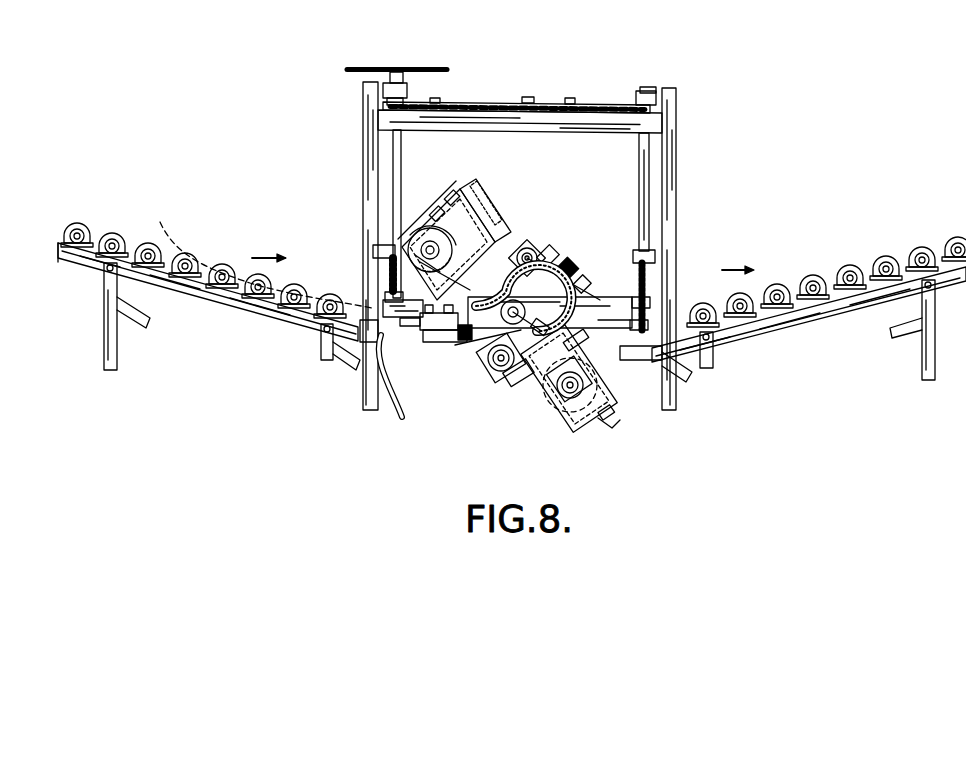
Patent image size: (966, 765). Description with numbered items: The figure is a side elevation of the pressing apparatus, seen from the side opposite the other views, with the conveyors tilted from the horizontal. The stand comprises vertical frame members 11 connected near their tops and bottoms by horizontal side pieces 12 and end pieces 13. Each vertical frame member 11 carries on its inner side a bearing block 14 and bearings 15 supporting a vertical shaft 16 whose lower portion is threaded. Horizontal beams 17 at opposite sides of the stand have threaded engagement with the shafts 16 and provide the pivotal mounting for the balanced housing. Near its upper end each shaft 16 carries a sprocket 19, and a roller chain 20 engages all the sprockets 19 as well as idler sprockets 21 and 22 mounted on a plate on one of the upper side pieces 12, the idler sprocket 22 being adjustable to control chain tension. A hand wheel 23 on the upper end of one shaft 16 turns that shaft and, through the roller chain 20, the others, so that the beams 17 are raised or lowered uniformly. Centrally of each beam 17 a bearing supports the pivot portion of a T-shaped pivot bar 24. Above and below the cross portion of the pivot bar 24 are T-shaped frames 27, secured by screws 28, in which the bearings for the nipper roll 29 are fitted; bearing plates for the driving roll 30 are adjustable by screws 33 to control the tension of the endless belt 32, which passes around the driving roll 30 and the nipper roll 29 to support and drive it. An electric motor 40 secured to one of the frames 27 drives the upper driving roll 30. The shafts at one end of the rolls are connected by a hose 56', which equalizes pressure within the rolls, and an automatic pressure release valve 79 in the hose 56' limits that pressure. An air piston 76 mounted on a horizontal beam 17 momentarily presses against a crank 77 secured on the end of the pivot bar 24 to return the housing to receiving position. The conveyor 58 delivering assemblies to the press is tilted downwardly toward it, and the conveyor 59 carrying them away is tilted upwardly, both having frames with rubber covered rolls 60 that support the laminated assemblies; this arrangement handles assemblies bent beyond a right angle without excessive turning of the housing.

The vertical frame member 11 is at (363, 192).
The horizontal side piece 12 is at (503, 133).
The end piece 13 is at (362, 112).
The bearing block 14 is at (412, 338).
The bearing 15 is at (404, 102).
The vertical shaft 16 is at (401, 147).
The horizontal beam 17 is at (582, 372).
The sprocket 19 is at (425, 103).
The roller chain 20 is at (600, 105).
The idler sprocket 21 is at (527, 98).
The idler sprocket 22 is at (572, 118).
The hand wheel 23 is at (368, 68).
The T-shaped pivot bar 24 is at (632, 262).
The T-shaped frame 27 is at (568, 262).
The screw 28 is at (588, 290).
The nipper roll 29 is at (506, 228).
The driving roll 30 is at (496, 215).
The endless belt 32 is at (538, 246).
The screw 33 is at (434, 210).
The electric motor 40 is at (468, 202).
The hose 56' is at (563, 255).
The conveyor 58 is at (236, 320).
The conveyor 59 is at (836, 316).
The conveyor roll 60 is at (112, 240).
The air piston 76 is at (438, 332).
The crank 77 is at (562, 322).
The automatic pressure release valve 79 is at (460, 344).